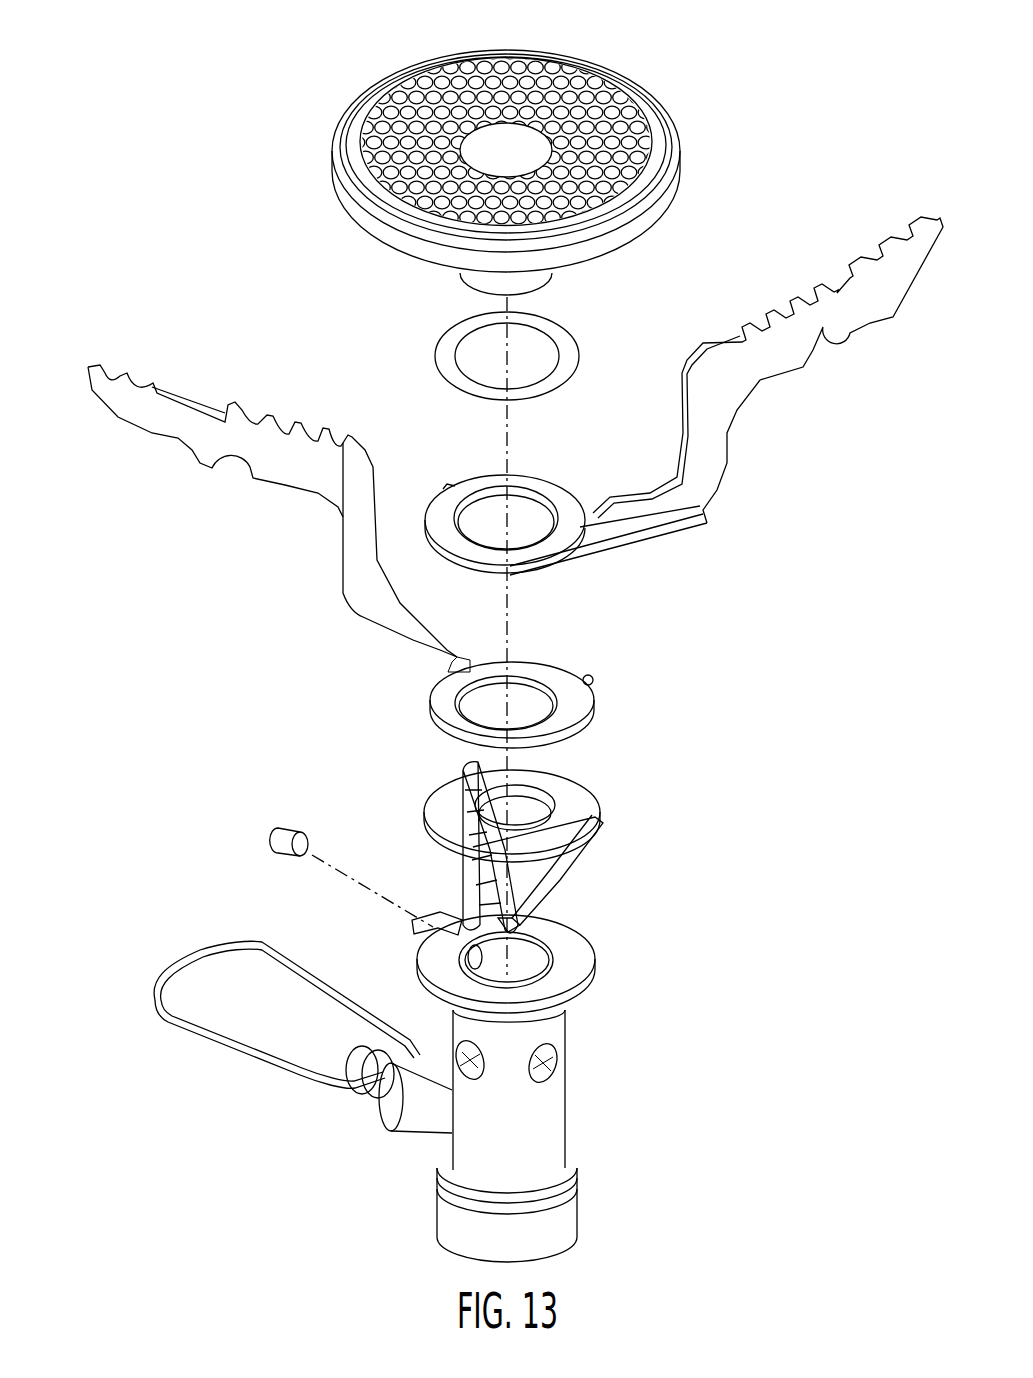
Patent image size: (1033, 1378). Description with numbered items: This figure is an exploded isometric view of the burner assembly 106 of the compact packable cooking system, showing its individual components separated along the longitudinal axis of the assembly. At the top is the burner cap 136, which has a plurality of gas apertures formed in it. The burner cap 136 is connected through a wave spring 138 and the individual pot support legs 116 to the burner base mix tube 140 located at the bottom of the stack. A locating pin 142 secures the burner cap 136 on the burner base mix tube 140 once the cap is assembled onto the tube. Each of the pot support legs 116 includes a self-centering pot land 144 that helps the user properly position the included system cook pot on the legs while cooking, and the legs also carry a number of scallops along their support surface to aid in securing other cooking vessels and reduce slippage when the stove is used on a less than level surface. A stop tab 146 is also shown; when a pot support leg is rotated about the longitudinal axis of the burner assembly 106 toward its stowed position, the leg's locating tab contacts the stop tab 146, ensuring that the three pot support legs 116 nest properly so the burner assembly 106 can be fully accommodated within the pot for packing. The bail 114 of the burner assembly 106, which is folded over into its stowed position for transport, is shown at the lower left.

The burner assembly 106 is at (90, 0).
The burner cap 136 is at (613, 62).
The wave spring 138 is at (439, 326).
The self-centering pot land 144 is at (850, 283).
The pot support legs 116 is at (870, 317).
The stop tab 146 is at (433, 923).
The locating pin 142 is at (273, 833).
The burner base mix tube 140 is at (548, 1130).
The bail 114 is at (230, 1053).